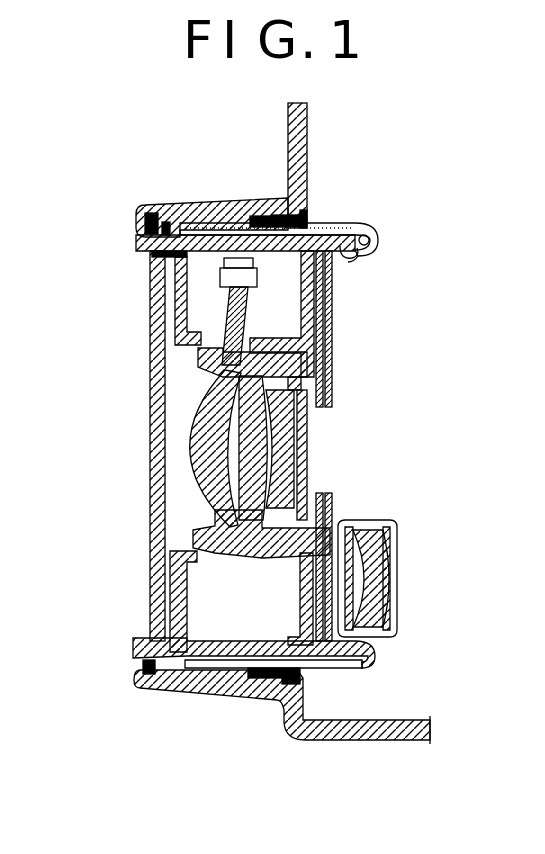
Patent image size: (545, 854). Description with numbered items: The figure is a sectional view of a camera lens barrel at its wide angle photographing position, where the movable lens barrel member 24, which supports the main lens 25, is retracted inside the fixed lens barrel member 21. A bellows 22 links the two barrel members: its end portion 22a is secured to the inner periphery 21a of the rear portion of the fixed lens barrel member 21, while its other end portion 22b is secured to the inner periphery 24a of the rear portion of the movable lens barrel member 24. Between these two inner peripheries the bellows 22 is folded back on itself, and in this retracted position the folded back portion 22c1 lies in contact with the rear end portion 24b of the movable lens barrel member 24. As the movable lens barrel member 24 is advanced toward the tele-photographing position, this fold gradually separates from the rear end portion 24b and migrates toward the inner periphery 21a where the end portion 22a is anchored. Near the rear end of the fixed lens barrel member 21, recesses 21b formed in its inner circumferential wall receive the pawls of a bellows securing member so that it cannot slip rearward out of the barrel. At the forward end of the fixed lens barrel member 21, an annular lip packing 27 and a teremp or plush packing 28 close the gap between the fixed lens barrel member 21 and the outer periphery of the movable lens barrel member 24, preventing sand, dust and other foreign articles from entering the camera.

The fixed lens barrel member 21 is at (221, 170).
The inner periphery of rear portion of fixed lens barrel member 21a is at (258, 216).
The recesses 21b is at (307, 198).
The bellows 22 is at (347, 224).
The end portion of bellows 22a is at (278, 215).
The other end portion of bellows 22b is at (352, 252).
The folded back portion of bellows 22c1 is at (378, 250).
The movable lens barrel member 24 is at (173, 257).
The inner periphery of rear portion of movable lens barrel member 24a is at (337, 252).
The rear end portion of movable lens barrel member 24b is at (378, 240).
The main lens 25 is at (205, 405).
The annular lip packing 27 is at (138, 226).
The teremp packing 28 is at (155, 205).